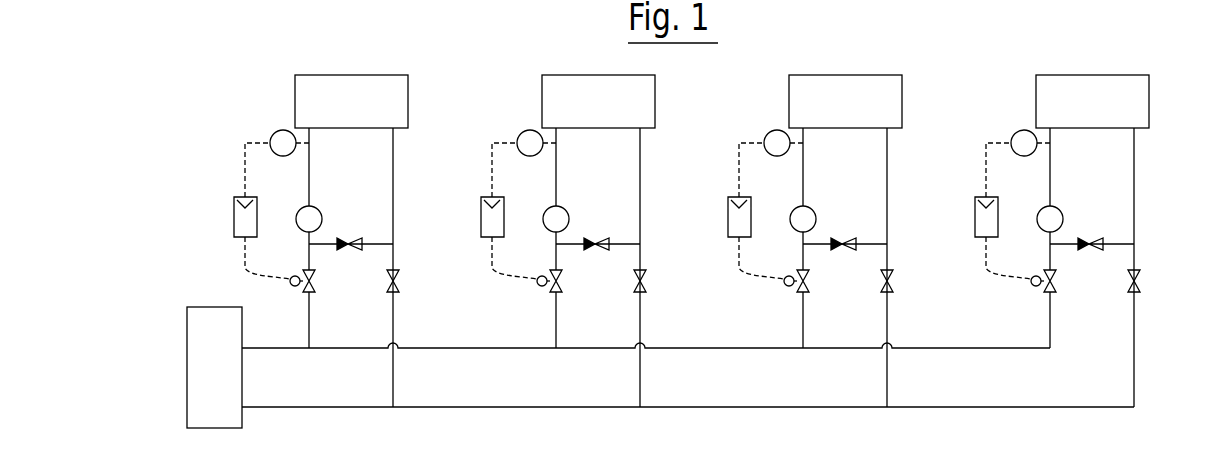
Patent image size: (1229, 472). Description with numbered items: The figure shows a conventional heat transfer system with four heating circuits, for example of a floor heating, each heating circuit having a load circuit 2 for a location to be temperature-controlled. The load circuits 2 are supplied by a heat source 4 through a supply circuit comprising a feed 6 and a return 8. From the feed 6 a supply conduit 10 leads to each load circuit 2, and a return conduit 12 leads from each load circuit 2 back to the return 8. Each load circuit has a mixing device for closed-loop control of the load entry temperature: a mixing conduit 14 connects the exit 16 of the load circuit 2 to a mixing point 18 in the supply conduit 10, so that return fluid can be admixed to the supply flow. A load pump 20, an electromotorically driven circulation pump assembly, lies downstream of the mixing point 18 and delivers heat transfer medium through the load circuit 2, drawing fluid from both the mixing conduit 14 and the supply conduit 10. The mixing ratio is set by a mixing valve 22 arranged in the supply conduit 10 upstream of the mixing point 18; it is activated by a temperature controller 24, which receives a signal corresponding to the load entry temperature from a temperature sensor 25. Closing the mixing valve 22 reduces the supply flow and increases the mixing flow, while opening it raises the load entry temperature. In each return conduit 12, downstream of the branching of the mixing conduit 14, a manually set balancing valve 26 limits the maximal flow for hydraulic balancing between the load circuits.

The load circuit 2 is at (722, 101).
The heat source 4 is at (214, 367).
The feed 6 is at (290, 348).
The return 8 is at (323, 407).
The supply conduit 10 is at (310, 333).
The return conduit 12 is at (397, 388).
The mixing conduit 14 is at (363, 242).
The exit 16 is at (408, 128).
The mixing point 18 is at (313, 252).
The load pump 20 is at (313, 208).
The mixing valve 22 is at (290, 284).
The temperature controller 24 is at (234, 228).
The temperature sensor 25 is at (271, 138).
The balancing valve 26 is at (398, 294).